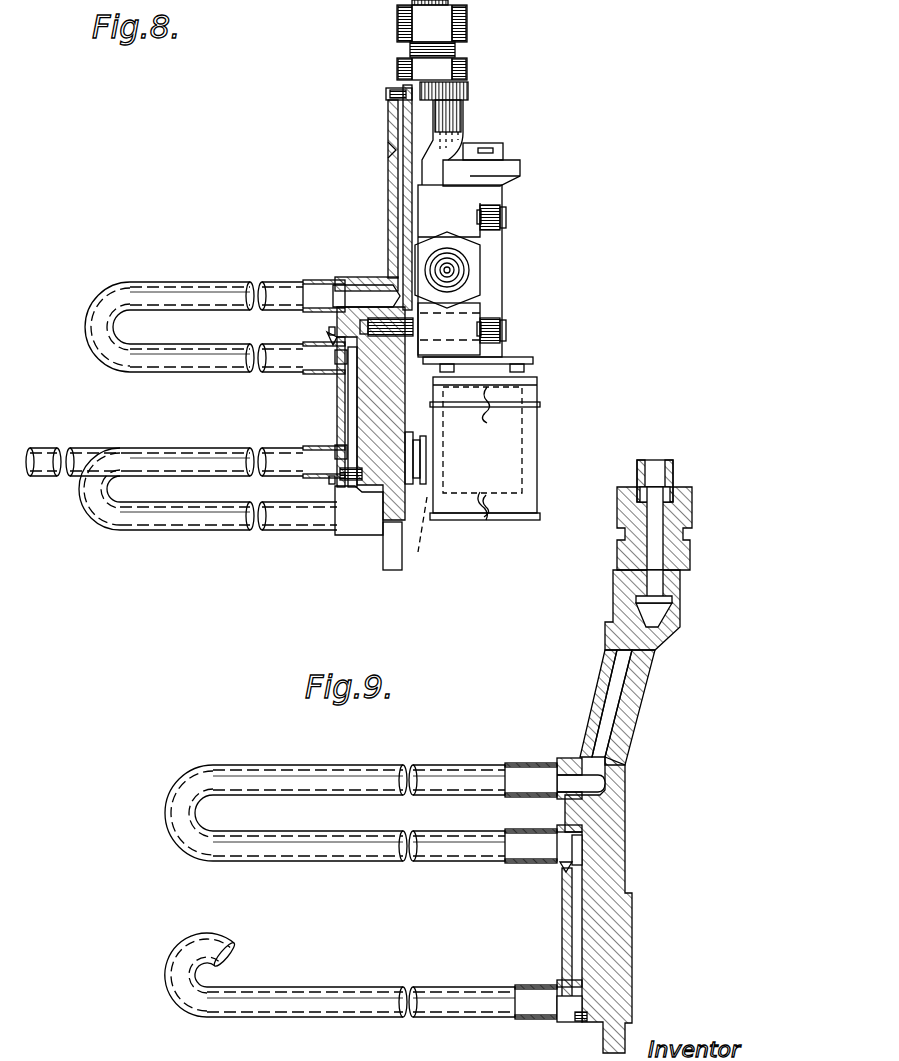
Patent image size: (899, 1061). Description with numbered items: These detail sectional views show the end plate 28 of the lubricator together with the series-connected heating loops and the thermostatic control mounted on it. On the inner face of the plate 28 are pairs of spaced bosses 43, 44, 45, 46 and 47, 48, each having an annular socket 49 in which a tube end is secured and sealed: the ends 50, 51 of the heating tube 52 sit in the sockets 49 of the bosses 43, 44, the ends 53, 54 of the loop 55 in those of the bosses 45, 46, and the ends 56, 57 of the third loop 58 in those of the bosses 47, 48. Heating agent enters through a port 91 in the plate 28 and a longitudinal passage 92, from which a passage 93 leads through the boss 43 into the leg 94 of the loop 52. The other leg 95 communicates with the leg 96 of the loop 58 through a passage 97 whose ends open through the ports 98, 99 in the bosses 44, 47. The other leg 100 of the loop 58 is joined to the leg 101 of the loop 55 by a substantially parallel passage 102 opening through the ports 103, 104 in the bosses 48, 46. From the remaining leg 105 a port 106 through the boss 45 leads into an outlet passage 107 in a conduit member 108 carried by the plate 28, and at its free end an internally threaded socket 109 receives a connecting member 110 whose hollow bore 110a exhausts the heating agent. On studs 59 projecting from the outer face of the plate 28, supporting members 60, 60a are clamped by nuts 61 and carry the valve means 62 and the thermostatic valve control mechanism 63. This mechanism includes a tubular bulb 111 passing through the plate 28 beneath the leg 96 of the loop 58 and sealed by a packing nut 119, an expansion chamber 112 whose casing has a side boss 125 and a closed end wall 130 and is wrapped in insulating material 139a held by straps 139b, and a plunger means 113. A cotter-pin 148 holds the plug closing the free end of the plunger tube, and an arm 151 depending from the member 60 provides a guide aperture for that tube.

In FIG. 8, the end plate 28 is at (392, 555).
In FIG. 9, the end plate 28 is at (630, 842).
In FIG. 8, the boss 43 is at (335, 285).
In FIG. 8, the boss 44 is at (340, 375).
In FIG. 9, the boss 45 is at (560, 765).
In FIG. 9, the boss 46 is at (562, 868).
In FIG. 8, the boss 47 is at (338, 470).
In FIG. 8, the boss 48 is at (345, 527).
In FIG. 9, the boss 48 is at (568, 1018).
In FIG. 8, the annular socket 49 is at (330, 330).
In FIG. 9, the annular socket 49 is at (565, 758).
In FIG. 8, the end of heating tube 50 is at (308, 282).
In FIG. 8, the end of heating tube 51 is at (338, 356).
In FIG. 8, the heating tube 52 is at (116, 300).
In FIG. 9, the end of heating loop 53 is at (552, 783).
In FIG. 9, the end of heating loop 54 is at (552, 850).
In FIG. 9, the heating loop 55 is at (200, 785).
In FIG. 8, the end of heating loop 56 is at (340, 452).
In FIG. 9, the end of heating loop 57 is at (553, 1003).
In FIG. 8, the heating loop 58 is at (106, 500).
In FIG. 9, the heating loop 58 is at (176, 990).
In FIG. 8, the stud 59 is at (507, 212).
In FIG. 8, the supporting member 60 is at (468, 202).
In FIG. 8, the supporting member 60a is at (518, 337).
In FIG. 8, the nut 61 is at (503, 224).
In FIG. 8, the valve means 62 is at (482, 274).
In FIG. 8, the thermostatic valve control mechanism 63 is at (533, 358).
In FIG. 8, the port 91 is at (386, 150).
In FIG. 8, the longitudinal passage 92 is at (407, 170).
In FIG. 8, the passage 93 is at (368, 277).
In FIG. 8, the leg of loop 94 is at (240, 290).
In FIG. 8, the leg of loop 95 is at (240, 362).
In FIG. 8, the leg of loop 96 is at (240, 460).
In FIG. 8, the passage 97 is at (350, 415).
In FIG. 8, the port 98 is at (330, 337).
In FIG. 8, the port 99 is at (330, 480).
In FIG. 8, the leg of loop 100 is at (225, 522).
In FIG. 9, the leg of loop 100 is at (450, 1006).
In FIG. 9, the leg of loop 101 is at (440, 845).
In FIG. 9, the passage 102 is at (566, 926).
In FIG. 9, the port 103 is at (581, 1022).
In FIG. 9, the port 104 is at (584, 852).
In FIG. 9, the leg of loop 105 is at (440, 770).
In FIG. 9, the port 106 is at (602, 787).
In FIG. 9, the outlet passage 107 is at (600, 742).
In FIG. 8, the conduit member 108 is at (388, 217).
In FIG. 9, the conduit member 108 is at (638, 690).
In FIG. 9, the internally threaded socket 109 is at (674, 612).
In FIG. 8, the connecting member 110 is at (466, 68).
In FIG. 9, the connecting member 110 is at (690, 548).
In FIG. 9, the hollow bore 110a is at (656, 540).
In FIG. 8, the bulb 111 is at (100, 448).
In FIG. 8, the expansion chamber 112 is at (538, 472).
In FIG. 8, the plunger means 113 is at (498, 256).
In FIG. 8, the packing nut 119 is at (428, 450).
In FIG. 8, the boss 125 is at (429, 532).
In FIG. 8, the end wall 130 is at (489, 522).
In FIG. 8, the insulating material 139a is at (527, 440).
In FIG. 8, the strap 139b is at (500, 400).
In FIG. 8, the cotter-pin 148 is at (503, 150).
In FIG. 8, the arm 151 is at (522, 168).